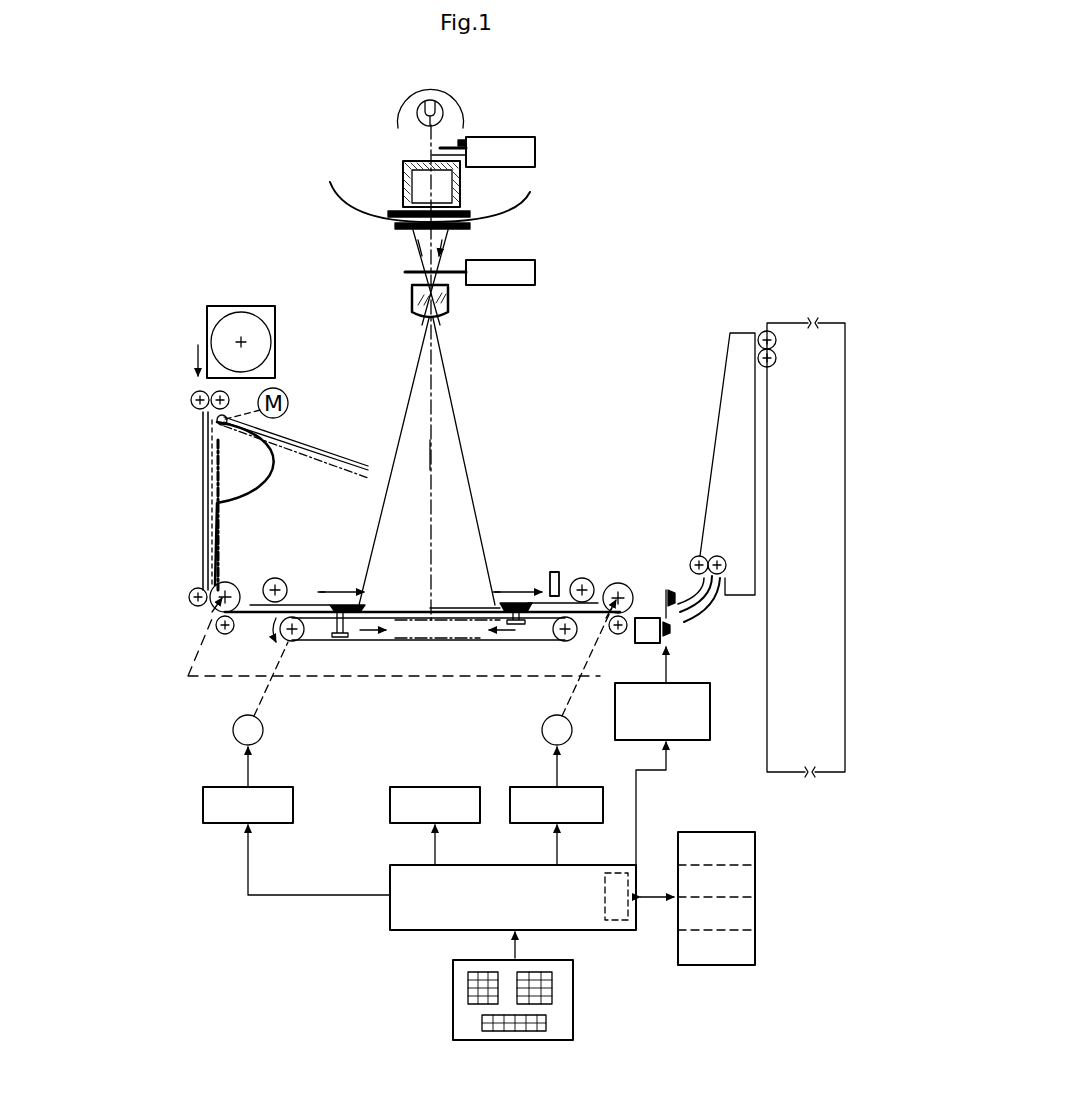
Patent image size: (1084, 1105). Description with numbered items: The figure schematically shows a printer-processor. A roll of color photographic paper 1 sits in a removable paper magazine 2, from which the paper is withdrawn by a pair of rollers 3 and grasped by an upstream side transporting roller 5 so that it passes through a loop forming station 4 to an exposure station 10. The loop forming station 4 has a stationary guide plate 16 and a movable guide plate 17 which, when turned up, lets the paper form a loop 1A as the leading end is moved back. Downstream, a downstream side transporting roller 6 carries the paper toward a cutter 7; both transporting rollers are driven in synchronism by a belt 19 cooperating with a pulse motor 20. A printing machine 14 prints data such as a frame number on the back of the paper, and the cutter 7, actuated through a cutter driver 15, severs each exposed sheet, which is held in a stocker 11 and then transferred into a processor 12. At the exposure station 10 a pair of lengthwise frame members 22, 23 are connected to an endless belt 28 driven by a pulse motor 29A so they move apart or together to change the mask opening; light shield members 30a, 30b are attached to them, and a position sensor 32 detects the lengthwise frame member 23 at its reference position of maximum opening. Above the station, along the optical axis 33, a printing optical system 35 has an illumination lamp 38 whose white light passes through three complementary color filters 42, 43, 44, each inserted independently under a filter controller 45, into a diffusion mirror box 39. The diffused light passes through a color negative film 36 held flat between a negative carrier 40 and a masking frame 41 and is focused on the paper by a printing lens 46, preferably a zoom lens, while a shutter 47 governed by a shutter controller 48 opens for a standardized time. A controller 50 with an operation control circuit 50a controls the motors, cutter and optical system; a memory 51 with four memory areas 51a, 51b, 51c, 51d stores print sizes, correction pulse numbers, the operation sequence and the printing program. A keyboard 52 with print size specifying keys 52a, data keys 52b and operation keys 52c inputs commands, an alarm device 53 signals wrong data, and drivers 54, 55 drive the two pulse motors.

The color photographic paper 1 is at (256, 312).
The cam / separation guide 1A is at (262, 483).
The paper magazine 2 is at (280, 316).
The pair of rollers 3 is at (190, 405).
The loop forming station 4 is at (300, 440).
The upstream side transporting roller 5 is at (232, 593).
The downstream side transporting roller 6 is at (619, 584).
The cutter 7 is at (670, 590).
The exposure station 10 is at (462, 606).
The stocker 11 is at (728, 352).
The processor 12 is at (800, 323).
The printing machine 14 is at (642, 645).
The cutter driver 15 is at (704, 683).
The stationary guide plate 16 is at (202, 485).
The movable guide plate 17 is at (313, 460).
The belt 19 is at (502, 681).
The pulse motor 20 is at (542, 732).
The lengthwise frame member 22 is at (343, 602).
The lengthwise frame member 23 is at (514, 600).
The endless belt 28 is at (322, 642).
The pulse motor 29A is at (262, 727).
The light shield member 30a is at (305, 604).
The light shield member 30b is at (566, 600).
The position sensor 32 is at (555, 572).
The optical axis / light cone 33 is at (430, 458).
The printing optical system 35 is at (550, 194).
The color negative film 36 is at (522, 213).
The illumination lamp 38 is at (417, 120).
The diffusion mirror box 39 is at (456, 190).
The negative carrier 40 is at (470, 210).
The masking frame 41 is at (470, 227).
The color filter 42 is at (464, 142).
The color filter 43 is at (443, 148).
The color filter 44 is at (433, 155).
The filter controller 45 is at (527, 137).
The printing lens 46 is at (450, 300).
The shutter 47 is at (412, 272).
The shutter controller 48 is at (537, 272).
The controller 50 is at (532, 919).
The operation control circuit 50a is at (617, 920).
The memory 51 is at (752, 930).
The memory area 51a is at (755, 848).
The memory area 51b is at (755, 880).
The memory area 51c is at (755, 910).
The memory area 51d is at (755, 944).
The keyboard 52 is at (523, 1008).
The print size specifying keys 52a is at (468, 992).
The data keys 52b is at (553, 990).
The operation keys 52c is at (548, 1025).
The alarm device 53 is at (390, 806).
The driver 54 is at (585, 770).
The driver 55 is at (284, 770).